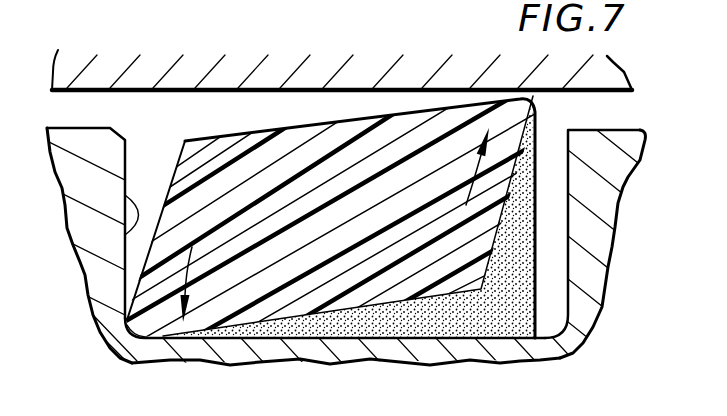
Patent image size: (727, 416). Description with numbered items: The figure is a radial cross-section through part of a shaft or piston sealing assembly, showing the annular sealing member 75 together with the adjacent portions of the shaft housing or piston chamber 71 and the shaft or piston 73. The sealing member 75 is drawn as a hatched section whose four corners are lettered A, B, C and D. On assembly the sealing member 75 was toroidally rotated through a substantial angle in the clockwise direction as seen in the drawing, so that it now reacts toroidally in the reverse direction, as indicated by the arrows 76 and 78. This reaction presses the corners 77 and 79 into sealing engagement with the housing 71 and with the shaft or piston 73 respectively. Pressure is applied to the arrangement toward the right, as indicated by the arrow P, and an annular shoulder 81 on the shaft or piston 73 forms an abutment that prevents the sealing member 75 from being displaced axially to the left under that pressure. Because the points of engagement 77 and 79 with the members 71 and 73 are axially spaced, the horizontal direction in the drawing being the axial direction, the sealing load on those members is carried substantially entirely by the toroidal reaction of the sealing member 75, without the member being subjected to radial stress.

The shaft housing or piston chamber 71 is at (223, 75).
The shaft or piston 73 is at (82, 150).
The annular sealing member 75 is at (353, 272).
The arrow 76 is at (460, 208).
The corner of the sealing member 77 is at (547, 118).
The arrow 78 is at (193, 267).
The corner of the sealing member 79 is at (157, 322).
The annular shoulder 81 is at (125, 240).
The corner A of body A is at (192, 150).
The corner B of body B is at (512, 96).
The corner C of body C is at (468, 275).
The corner D of body D is at (123, 348).
The arrow P is at (570, 110).